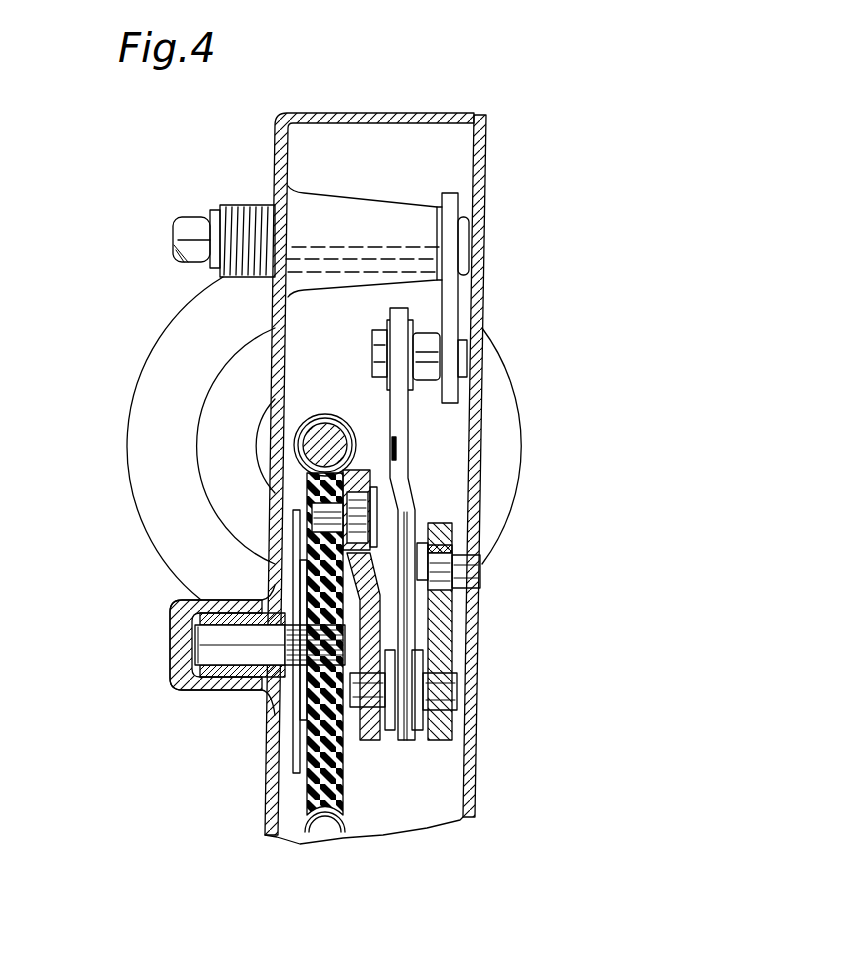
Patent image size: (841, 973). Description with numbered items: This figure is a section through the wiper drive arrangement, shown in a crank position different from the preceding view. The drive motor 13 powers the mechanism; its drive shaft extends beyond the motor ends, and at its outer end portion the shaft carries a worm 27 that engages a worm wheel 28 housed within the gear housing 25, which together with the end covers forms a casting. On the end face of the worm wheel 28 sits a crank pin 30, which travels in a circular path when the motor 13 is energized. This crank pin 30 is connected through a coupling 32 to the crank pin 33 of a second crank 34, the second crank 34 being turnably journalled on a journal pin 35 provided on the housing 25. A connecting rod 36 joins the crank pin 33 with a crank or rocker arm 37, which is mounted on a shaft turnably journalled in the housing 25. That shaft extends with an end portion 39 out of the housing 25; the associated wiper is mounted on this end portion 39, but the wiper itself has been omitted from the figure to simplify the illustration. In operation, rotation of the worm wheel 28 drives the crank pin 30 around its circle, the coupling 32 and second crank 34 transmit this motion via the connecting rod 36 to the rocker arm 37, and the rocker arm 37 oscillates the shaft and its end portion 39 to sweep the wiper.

The drive motor 13 is at (167, 463).
The gear housing 25 is at (477, 413).
The worm 27 is at (303, 427).
The worm wheel 28 is at (337, 787).
The crank pin 30 is at (360, 517).
The coupling 32 is at (370, 570).
The crank pin 33 is at (440, 688).
The second crank 34 is at (433, 633).
The journal pin 35 is at (465, 568).
The connecting rod 36 is at (398, 432).
The rocker arm 37 is at (447, 295).
The end portion of shaft 39 is at (189, 223).